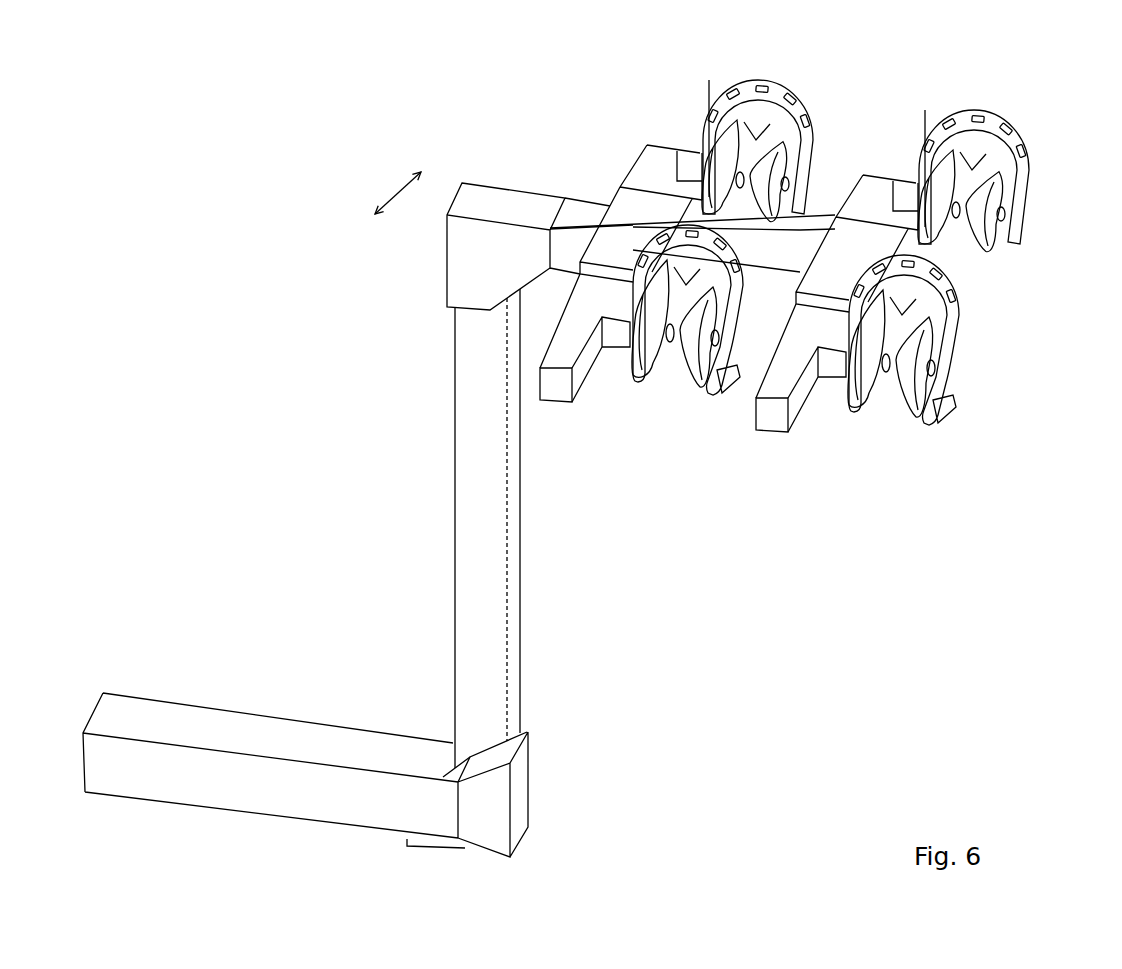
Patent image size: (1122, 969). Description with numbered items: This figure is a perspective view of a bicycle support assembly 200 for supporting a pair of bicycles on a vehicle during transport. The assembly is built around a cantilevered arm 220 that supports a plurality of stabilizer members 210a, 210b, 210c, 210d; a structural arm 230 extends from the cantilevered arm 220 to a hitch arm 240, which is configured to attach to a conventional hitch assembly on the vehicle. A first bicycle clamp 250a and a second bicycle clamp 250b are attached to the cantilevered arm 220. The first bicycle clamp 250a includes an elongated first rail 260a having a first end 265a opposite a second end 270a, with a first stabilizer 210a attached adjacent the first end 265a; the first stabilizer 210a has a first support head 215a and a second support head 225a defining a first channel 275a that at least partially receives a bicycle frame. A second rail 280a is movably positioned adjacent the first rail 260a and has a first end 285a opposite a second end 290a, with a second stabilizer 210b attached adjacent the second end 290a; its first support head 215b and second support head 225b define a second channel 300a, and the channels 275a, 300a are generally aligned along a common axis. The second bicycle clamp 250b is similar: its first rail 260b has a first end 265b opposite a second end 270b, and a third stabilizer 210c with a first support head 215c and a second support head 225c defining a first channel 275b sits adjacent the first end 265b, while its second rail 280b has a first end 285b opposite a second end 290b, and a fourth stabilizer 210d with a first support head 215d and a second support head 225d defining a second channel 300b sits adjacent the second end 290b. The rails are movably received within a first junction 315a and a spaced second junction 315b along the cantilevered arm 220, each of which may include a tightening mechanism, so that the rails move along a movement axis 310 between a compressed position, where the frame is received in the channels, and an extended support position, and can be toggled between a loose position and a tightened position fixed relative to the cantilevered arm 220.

The bicycle support assembly 200 is at (459, 491).
The first stabilizer 210a is at (787, 124).
The second stabilizer 210b is at (687, 335).
The third stabilizer 210c is at (1016, 160).
The fourth stabilizer 210d is at (950, 374).
The first support head 215a is at (728, 145).
The first support head 215b is at (653, 355).
The first support head 215c is at (948, 162).
The first support head 215d is at (870, 388).
The cantilevered arm 220 is at (575, 228).
The second support head 225a is at (793, 153).
The second support head 225b is at (700, 372).
The second support head 225c is at (1005, 193).
The second support head 225d is at (955, 388).
The structural arm 230 is at (467, 540).
The hitch arm 240 is at (250, 732).
The first bicycle clamp 250a is at (730, 269).
The second bicycle clamp 250b is at (956, 305).
The first rail 260a is at (640, 178).
The first rail 260b is at (880, 188).
The first end 265a is at (668, 140).
The first end 265b is at (897, 153).
The second end 270a is at (543, 403).
The second end 270b is at (760, 435).
The first channel 275a is at (757, 137).
The first channel 275b is at (973, 158).
The second rail 280a is at (677, 180).
The second rail 280b is at (910, 188).
The first end 285a is at (692, 155).
The first end 285b is at (926, 138).
The second end 290a is at (586, 370).
The second end 290b is at (801, 394).
The second channel 300a is at (687, 303).
The second channel 300b is at (907, 320).
The movement axis 310 is at (377, 183).
The first junction 315a is at (615, 235).
The second junction 315b is at (877, 247).